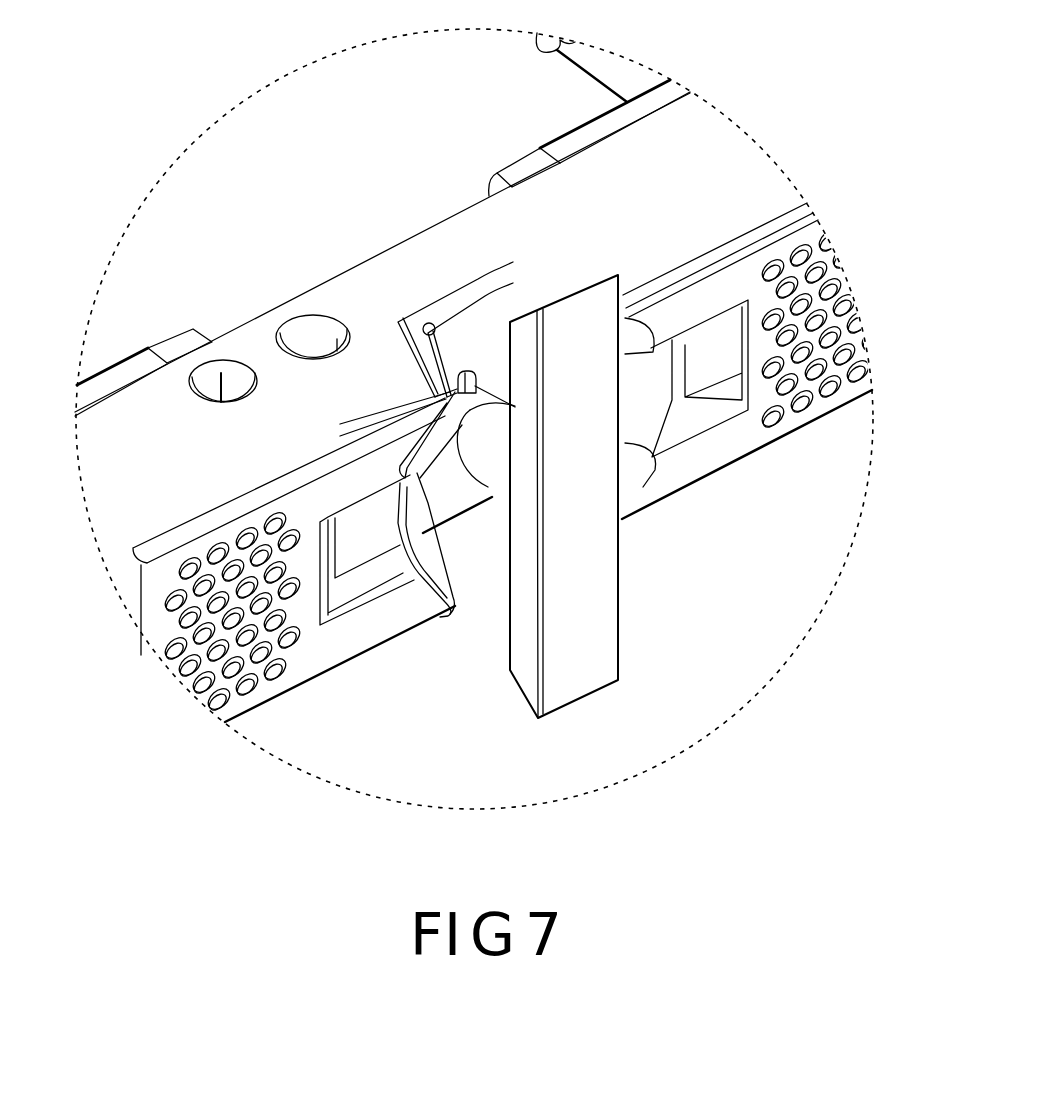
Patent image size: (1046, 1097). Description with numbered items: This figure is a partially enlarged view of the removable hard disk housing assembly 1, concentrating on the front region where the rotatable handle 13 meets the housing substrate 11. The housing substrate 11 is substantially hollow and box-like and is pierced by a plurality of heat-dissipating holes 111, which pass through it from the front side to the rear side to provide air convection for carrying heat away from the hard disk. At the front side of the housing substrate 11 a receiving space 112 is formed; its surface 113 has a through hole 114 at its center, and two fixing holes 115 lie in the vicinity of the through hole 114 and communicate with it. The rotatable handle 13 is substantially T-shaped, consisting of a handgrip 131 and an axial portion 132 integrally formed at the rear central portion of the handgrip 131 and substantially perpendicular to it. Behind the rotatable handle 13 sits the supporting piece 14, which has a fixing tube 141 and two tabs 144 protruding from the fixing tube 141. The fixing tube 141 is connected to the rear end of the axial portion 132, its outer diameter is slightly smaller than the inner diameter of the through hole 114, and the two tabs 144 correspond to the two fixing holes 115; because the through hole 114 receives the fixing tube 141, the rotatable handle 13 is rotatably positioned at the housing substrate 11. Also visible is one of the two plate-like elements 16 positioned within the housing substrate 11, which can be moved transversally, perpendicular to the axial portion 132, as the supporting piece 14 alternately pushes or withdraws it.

The removable hard disk housing assembly 1 is at (738, 583).
The housing substrate 11 is at (742, 475).
The heat-dissipating holes 111 is at (832, 258).
The receiving space 112 is at (443, 495).
The surface 113 is at (483, 323).
The through hole 114 is at (442, 430).
The fixing holes 115 is at (462, 370).
The rotatable handle 13 is at (605, 687).
The handgrip 131 is at (601, 602).
The axial portion 132 is at (502, 455).
The supporting piece 14 is at (459, 460).
The fixing tube 141 is at (483, 397).
The tabs 144 is at (423, 335).
The plate-like elements 16 is at (362, 572).